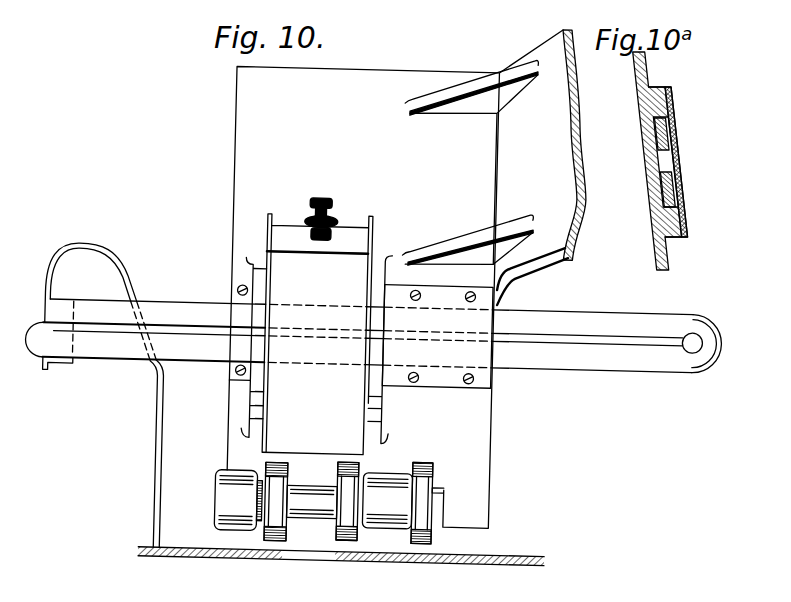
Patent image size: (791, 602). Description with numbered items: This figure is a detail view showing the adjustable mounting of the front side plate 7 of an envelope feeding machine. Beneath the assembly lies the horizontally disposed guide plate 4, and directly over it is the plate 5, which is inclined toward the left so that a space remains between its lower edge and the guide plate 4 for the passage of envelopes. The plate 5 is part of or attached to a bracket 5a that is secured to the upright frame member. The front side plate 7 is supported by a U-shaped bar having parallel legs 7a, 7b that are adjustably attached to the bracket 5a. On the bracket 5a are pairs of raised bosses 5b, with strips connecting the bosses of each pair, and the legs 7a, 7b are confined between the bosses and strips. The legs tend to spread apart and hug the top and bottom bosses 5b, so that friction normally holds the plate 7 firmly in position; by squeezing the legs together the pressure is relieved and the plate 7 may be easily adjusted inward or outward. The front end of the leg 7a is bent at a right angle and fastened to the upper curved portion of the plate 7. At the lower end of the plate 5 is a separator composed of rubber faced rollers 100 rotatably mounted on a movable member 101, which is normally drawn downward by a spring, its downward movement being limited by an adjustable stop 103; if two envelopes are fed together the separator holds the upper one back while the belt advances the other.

The guide plate 4 is at (529, 529).
The plate 5 is at (385, 73).
The bracket 5a is at (577, 77).
The raised bosses 5b is at (238, 281).
The front side plate 7 is at (88, 250).
The leg of U-shaped bar 7a is at (188, 304).
The leg of U-shaped bar 7b is at (197, 358).
The rubber faced rollers 100 is at (298, 463).
The movable member 101 is at (276, 387).
The adjustable stop 103 is at (330, 199).